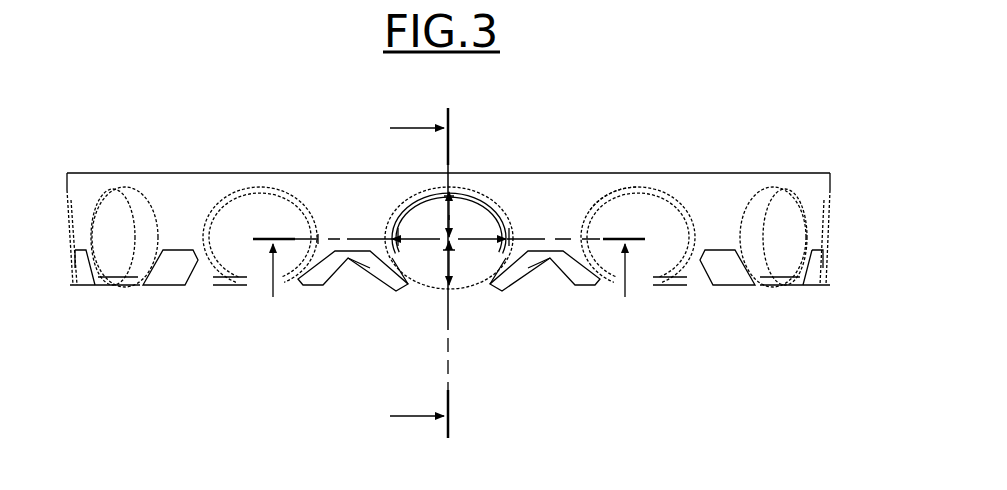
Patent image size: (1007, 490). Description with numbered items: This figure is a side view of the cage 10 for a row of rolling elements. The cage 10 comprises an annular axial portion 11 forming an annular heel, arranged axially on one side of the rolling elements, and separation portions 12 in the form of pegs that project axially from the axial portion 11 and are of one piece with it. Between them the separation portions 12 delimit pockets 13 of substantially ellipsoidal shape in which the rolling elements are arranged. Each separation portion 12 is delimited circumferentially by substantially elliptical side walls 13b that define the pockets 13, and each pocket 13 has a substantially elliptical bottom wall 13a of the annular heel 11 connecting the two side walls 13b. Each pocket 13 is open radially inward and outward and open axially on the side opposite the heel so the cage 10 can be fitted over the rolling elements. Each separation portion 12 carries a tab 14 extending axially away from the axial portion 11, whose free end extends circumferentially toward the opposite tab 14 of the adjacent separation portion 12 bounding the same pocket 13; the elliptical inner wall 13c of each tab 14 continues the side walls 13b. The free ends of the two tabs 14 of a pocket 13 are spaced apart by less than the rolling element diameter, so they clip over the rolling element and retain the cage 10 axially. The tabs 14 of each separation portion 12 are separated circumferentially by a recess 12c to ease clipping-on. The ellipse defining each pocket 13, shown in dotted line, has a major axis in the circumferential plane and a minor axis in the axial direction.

The cage 10 is at (663, 98).
The annular axial portion 11 is at (637, 182).
The separation portion 12 is at (177, 182).
The recess 12c is at (573, 183).
The pocket 13 is at (125, 281).
The wall of the annular heel 13a is at (472, 192).
The side wall 13b is at (352, 288).
The elliptical inner wall 13c is at (420, 290).
The tab 14 is at (386, 288).